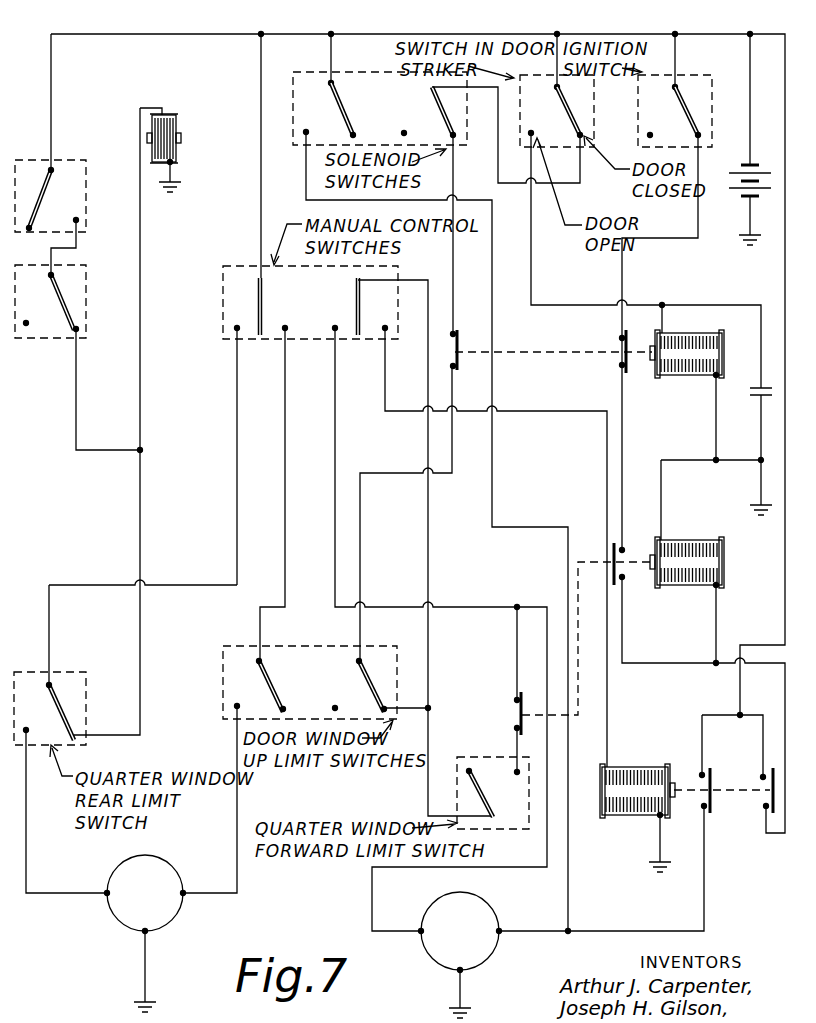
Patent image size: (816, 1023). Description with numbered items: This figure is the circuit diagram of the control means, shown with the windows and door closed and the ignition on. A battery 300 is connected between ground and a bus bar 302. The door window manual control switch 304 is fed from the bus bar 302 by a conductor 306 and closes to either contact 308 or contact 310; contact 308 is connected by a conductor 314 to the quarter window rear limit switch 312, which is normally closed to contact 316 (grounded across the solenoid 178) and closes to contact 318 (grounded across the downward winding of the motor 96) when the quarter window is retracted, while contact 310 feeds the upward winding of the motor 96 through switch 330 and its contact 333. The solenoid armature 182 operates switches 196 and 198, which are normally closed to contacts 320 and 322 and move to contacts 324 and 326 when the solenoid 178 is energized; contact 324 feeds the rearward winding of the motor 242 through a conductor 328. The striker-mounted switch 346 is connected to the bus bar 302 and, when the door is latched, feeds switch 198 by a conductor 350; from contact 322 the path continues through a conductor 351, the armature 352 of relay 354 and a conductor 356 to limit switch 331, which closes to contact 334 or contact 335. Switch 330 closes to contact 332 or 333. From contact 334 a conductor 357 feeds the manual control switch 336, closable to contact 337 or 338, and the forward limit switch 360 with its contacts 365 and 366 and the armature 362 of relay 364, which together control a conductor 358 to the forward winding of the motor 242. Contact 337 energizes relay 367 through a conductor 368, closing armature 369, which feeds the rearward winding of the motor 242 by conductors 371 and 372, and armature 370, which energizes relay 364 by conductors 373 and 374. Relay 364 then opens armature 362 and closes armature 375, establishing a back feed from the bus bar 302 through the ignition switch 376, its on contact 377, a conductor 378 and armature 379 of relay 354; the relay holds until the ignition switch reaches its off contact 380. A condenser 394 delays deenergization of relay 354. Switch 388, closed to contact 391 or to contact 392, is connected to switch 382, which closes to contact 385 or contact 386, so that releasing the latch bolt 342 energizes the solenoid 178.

The bus bar 302 is at (472, 36).
The switch 196 is at (333, 95).
The contact 320 is at (354, 133).
The contact 326 is at (404, 132).
The switch 198 is at (441, 114).
The contact 322 is at (455, 140).
The contact 324 is at (306, 134).
The gear type bolt 342 is at (540, 123).
The switch 346 is at (570, 111).
The off contact 380 is at (649, 135).
The conductor 350 is at (532, 185).
The ignition switch 376 is at (684, 100).
The on contact 377 is at (699, 135).
The battery 300 is at (735, 188).
The solenoid 178 is at (162, 118).
The solenoid armature 182 is at (181, 138).
The switch 388 is at (47, 183).
The contact 391 is at (29, 229).
The contact 392 is at (77, 219).
The switch 382 is at (64, 300).
The contact 385 is at (77, 326).
The contact 386 is at (27, 324).
The conductor 306 is at (261, 195).
The door window manual control switch 304 is at (262, 302).
The contact 308 is at (236, 330).
The contact 310 is at (286, 330).
The contact 338 is at (335, 326).
The manual control switch 336 is at (358, 326).
The contact 337 is at (385, 330).
The conductor 351 is at (452, 275).
The armature 352 is at (457, 330).
The conductor 328 is at (493, 310).
The relay 354 is at (680, 333).
The armature 379 is at (627, 372).
The conductor 378 is at (624, 287).
The conductor 371 is at (783, 286).
The conductor 374 is at (690, 462).
The condenser 394 is at (762, 392).
The conductor 368 is at (528, 411).
The conductor 356 is at (406, 473).
The conductor 358 is at (488, 606).
The conductor 357 is at (429, 560).
The relay 364 is at (680, 540).
The armature 375 is at (623, 580).
The conductor 373 is at (740, 712).
The conductor 314 is at (164, 585).
The contact 316 is at (75, 733).
The limit switch 330 is at (268, 686).
The contact 332 is at (284, 706).
The contact 335 is at (335, 706).
The limit switch 331 is at (368, 668).
The contact 334 is at (386, 707).
The contact 333 is at (237, 705).
The quarter window rear limit switch 312 is at (50, 684).
The contact 318 is at (26, 729).
The motor 96 is at (180, 907).
The armature 362 is at (517, 701).
The quarter window forward limit switch 360 is at (476, 774).
The contact 365 is at (468, 771).
The contact 366 is at (517, 774).
The relay 367 is at (629, 767).
The armature 369 is at (713, 781).
The armature 370 is at (766, 796).
The conductor 372 is at (710, 874).
The motor 242 is at (500, 946).